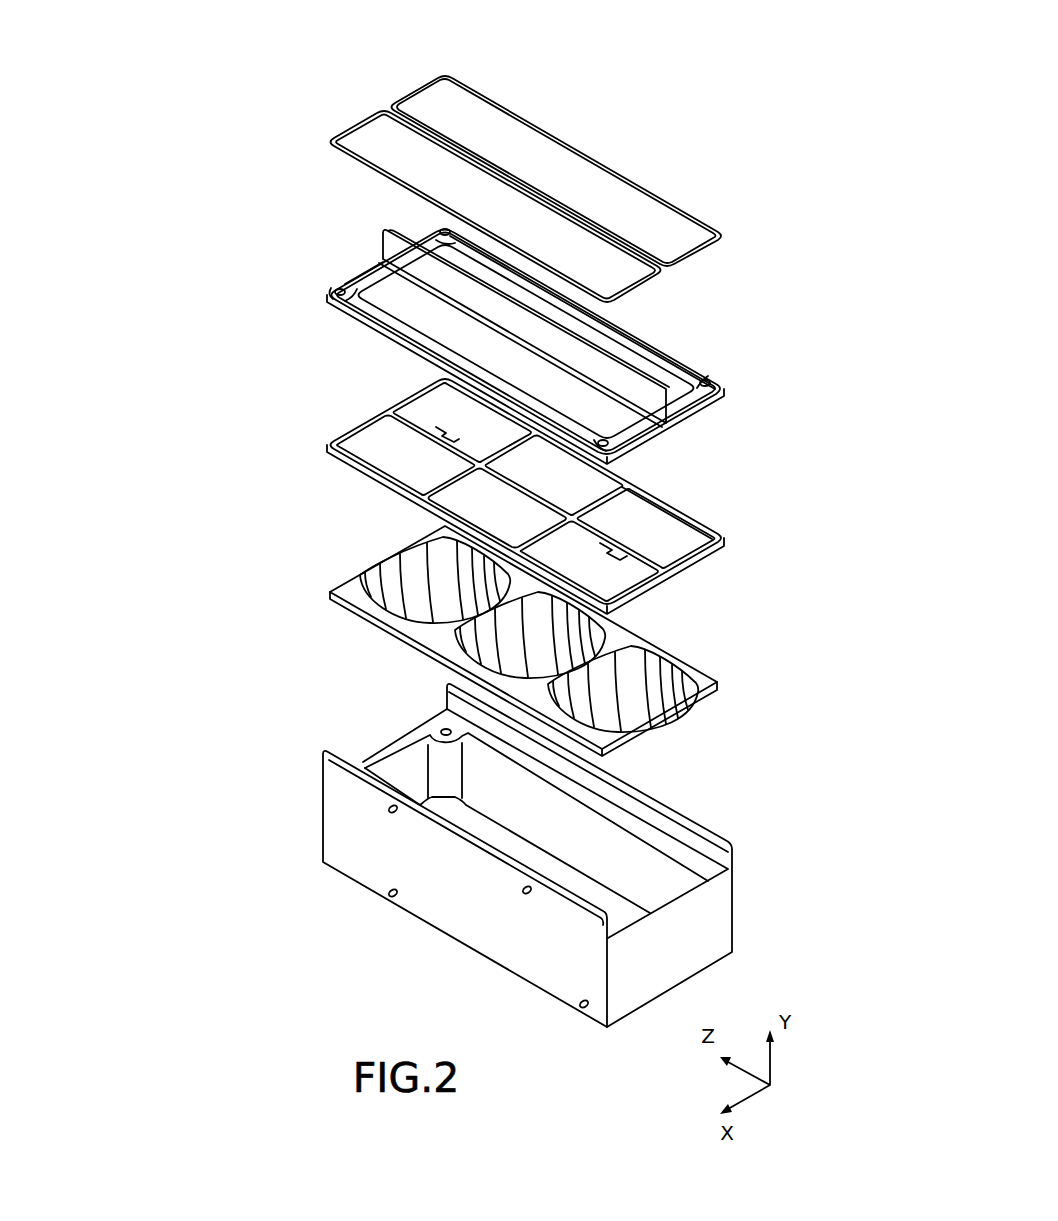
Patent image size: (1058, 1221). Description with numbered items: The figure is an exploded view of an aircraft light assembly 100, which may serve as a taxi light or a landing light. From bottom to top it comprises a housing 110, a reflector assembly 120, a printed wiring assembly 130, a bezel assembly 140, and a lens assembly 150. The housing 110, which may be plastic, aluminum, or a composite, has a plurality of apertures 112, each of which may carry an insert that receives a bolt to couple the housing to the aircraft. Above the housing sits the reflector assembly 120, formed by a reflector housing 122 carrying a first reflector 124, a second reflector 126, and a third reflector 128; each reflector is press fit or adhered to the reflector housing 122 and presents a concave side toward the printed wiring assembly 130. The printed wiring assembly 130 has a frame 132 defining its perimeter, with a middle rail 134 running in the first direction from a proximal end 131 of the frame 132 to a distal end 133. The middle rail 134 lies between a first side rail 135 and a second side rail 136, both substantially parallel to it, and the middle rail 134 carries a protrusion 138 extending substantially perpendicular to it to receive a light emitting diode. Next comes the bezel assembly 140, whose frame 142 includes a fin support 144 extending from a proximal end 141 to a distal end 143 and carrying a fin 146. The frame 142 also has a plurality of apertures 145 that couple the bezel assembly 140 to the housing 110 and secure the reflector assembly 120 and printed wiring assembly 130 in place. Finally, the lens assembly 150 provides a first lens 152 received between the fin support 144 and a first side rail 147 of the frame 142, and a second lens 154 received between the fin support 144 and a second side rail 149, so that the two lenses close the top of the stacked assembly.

The aircraft light assembly 100 is at (150, 108).
The housing 110 is at (256, 689).
The plurality of apertures 112 is at (384, 891).
The reflector assembly 120 is at (342, 565).
The reflector housing 122 is at (720, 682).
The first reflector 124 is at (542, 643).
The second reflector 126 is at (645, 710).
The third reflector 128 is at (457, 591).
The printed wiring assembly 130 is at (332, 416).
The proximal end 131 is at (682, 565).
The frame 132 is at (682, 514).
The distal end 133 is at (427, 387).
The middle rail 134 is at (513, 497).
The first side rail 135 is at (433, 516).
The second side rail 136 is at (682, 478).
The protrusion 138 is at (447, 428).
The bezel assembly 140 is at (302, 196).
The proximal end 141 is at (708, 402).
The frame 142 is at (692, 363).
The distal end 143 is at (381, 258).
The fin support 144 is at (440, 299).
The plurality of apertures 145 is at (440, 226).
The fin 146 is at (605, 367).
The first side rail 147 is at (462, 357).
The second side rail 149 is at (637, 330).
The lens assembly 150 is at (413, 68).
The first lens 152 is at (457, 178).
The second lens 154 is at (542, 153).